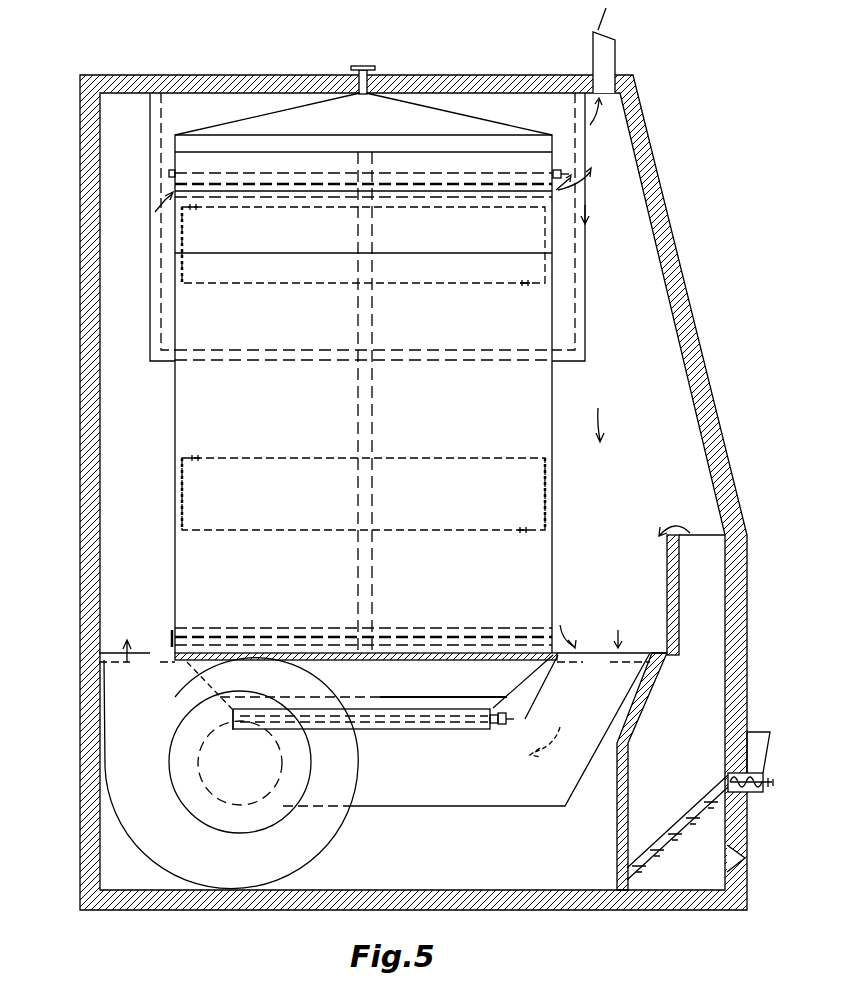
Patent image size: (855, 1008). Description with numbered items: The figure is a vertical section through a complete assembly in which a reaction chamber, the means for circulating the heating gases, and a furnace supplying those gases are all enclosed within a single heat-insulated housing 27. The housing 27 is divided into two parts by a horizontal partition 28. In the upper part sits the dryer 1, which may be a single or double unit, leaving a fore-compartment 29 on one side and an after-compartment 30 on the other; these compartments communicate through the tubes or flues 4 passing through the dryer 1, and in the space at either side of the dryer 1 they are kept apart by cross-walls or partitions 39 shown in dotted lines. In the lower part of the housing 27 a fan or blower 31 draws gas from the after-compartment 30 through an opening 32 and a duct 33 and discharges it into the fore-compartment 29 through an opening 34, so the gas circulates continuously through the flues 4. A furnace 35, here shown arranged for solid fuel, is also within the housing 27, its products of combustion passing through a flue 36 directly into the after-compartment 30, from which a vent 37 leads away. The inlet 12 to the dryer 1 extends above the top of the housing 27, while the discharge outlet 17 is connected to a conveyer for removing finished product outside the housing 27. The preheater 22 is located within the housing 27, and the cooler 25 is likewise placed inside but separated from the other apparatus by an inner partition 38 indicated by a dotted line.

The dryer 1 is at (175, 431).
The tubes or flues 4 is at (175, 190).
The inlet 12 is at (368, 68).
The discharge outlet 17 is at (503, 699).
The preheater 22 is at (398, 545).
The cooler 25 is at (318, 297).
The housing 27 is at (80, 549).
The horizontal partition 28 is at (404, 659).
The fore-compartment 29 is at (141, 227).
The after-compartment 30 is at (585, 267).
The fan or blower 31 is at (336, 820).
The opening 32 is at (612, 663).
The duct 33 is at (469, 799).
The opening 34 is at (137, 658).
The furnace 35 is at (695, 712).
The flue 36 is at (686, 590).
The vent 37 is at (601, 62).
The inner partition 38 is at (285, 352).
The cross-walls or partitions 39 is at (356, 415).